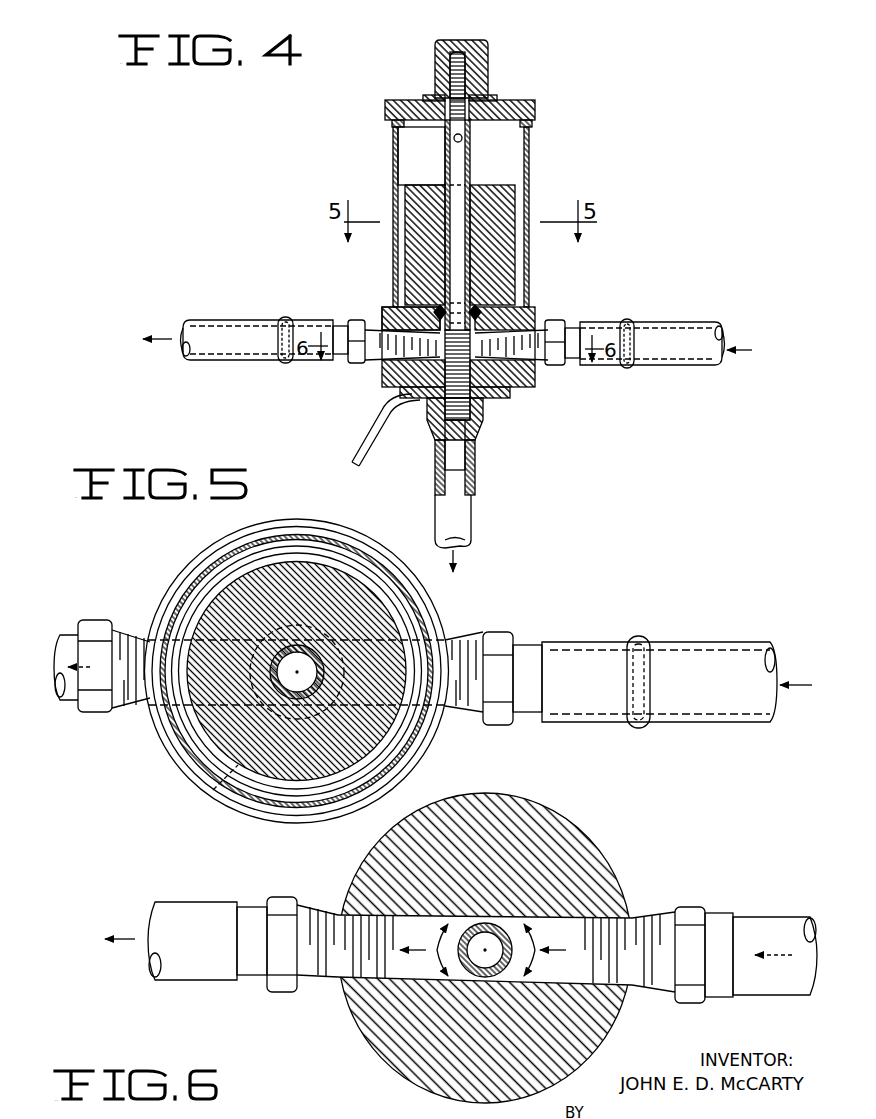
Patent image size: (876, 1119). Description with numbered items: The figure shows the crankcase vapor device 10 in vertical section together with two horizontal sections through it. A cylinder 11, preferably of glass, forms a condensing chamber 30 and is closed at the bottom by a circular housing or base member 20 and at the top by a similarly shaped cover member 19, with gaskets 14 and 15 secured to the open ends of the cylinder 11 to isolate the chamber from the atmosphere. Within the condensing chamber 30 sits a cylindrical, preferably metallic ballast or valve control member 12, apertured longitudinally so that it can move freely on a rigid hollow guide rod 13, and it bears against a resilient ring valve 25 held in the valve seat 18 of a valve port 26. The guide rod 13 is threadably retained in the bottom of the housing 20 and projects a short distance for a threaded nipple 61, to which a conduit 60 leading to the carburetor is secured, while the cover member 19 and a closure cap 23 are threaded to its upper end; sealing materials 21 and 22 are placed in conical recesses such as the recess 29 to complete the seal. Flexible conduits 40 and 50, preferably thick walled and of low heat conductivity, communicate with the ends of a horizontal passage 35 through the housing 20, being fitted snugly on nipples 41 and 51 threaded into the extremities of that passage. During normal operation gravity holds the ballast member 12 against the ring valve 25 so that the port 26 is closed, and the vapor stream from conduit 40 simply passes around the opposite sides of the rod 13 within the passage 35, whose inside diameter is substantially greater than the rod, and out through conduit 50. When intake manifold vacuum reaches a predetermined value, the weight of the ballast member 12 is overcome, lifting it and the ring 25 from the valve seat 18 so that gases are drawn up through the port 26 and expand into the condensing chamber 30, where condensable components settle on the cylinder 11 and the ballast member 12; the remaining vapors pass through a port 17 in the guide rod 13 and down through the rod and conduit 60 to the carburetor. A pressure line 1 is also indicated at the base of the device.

In FIG. 4, the pressure line 1 is at (376, 421).
In FIG. 4, the device 10 is at (535, 96).
In FIG. 4, the cylinder 11 is at (529, 141).
In FIG. 5, the cylinder 11 is at (192, 597).
In FIG. 4, the ballast or valve control member 12 is at (420, 247).
In FIG. 5, the ballast or valve control member 12 is at (315, 579).
In FIG. 4, the guiding and conduit means 13 is at (470, 252).
In FIG. 5, the guiding and conduit means 13 is at (345, 728).
In FIG. 6, the guiding and conduit means 13 is at (505, 968).
In FIG. 4, the gasket 14 is at (525, 306).
In FIG. 5, the gasket 14 is at (218, 561).
In FIG. 4, the gasket 15 is at (392, 124).
In FIG. 4, the port 17 is at (462, 141).
In FIG. 4, the valve seat 18 is at (420, 321).
In FIG. 4, the cover member 19 is at (535, 108).
In FIG. 4, the housing or base member 20 is at (532, 323).
In FIG. 5, the housing or base member 20 is at (190, 766).
In FIG. 6, the housing or base member 20 is at (575, 838).
In FIG. 4, the sealing material 21 is at (483, 411).
In FIG. 4, the sealing material 22 is at (488, 98).
In FIG. 4, the closure cap 23 is at (488, 56).
In FIG. 4, the ring valve 25 is at (436, 310).
In FIG. 5, the ring valve 25 is at (213, 791).
In FIG. 4, the valve port 26 is at (530, 381).
In FIG. 4, the conical recess 29 is at (432, 98).
In FIG. 4, the condensing chamber 30 is at (405, 162).
In FIG. 5, the condensing chamber 30 is at (395, 631).
In FIG. 4, the horizontal passage 35 is at (410, 361).
In FIG. 5, the horizontal passage 35 is at (160, 733).
In FIG. 6, the horizontal passage 35 is at (400, 975).
In FIG. 4, the flexible conduit 40 is at (660, 327).
In FIG. 5, the flexible conduit 40 is at (705, 643).
In FIG. 6, the flexible conduit 40 is at (755, 988).
In FIG. 4, the nipple 41 is at (566, 327).
In FIG. 5, the nipple 41 is at (500, 634).
In FIG. 6, the nipple 41 is at (655, 912).
In FIG. 4, the flexible conduit 50 is at (240, 320).
In FIG. 5, the flexible conduit 50 is at (70, 701).
In FIG. 6, the flexible conduit 50 is at (195, 981).
In FIG. 4, the nipple 51 is at (350, 320).
In FIG. 5, the nipple 51 is at (98, 623).
In FIG. 6, the nipple 51 is at (322, 905).
In FIG. 4, the conduit 60 is at (435, 501).
In FIG. 4, the threaded nipple 61 is at (475, 459).